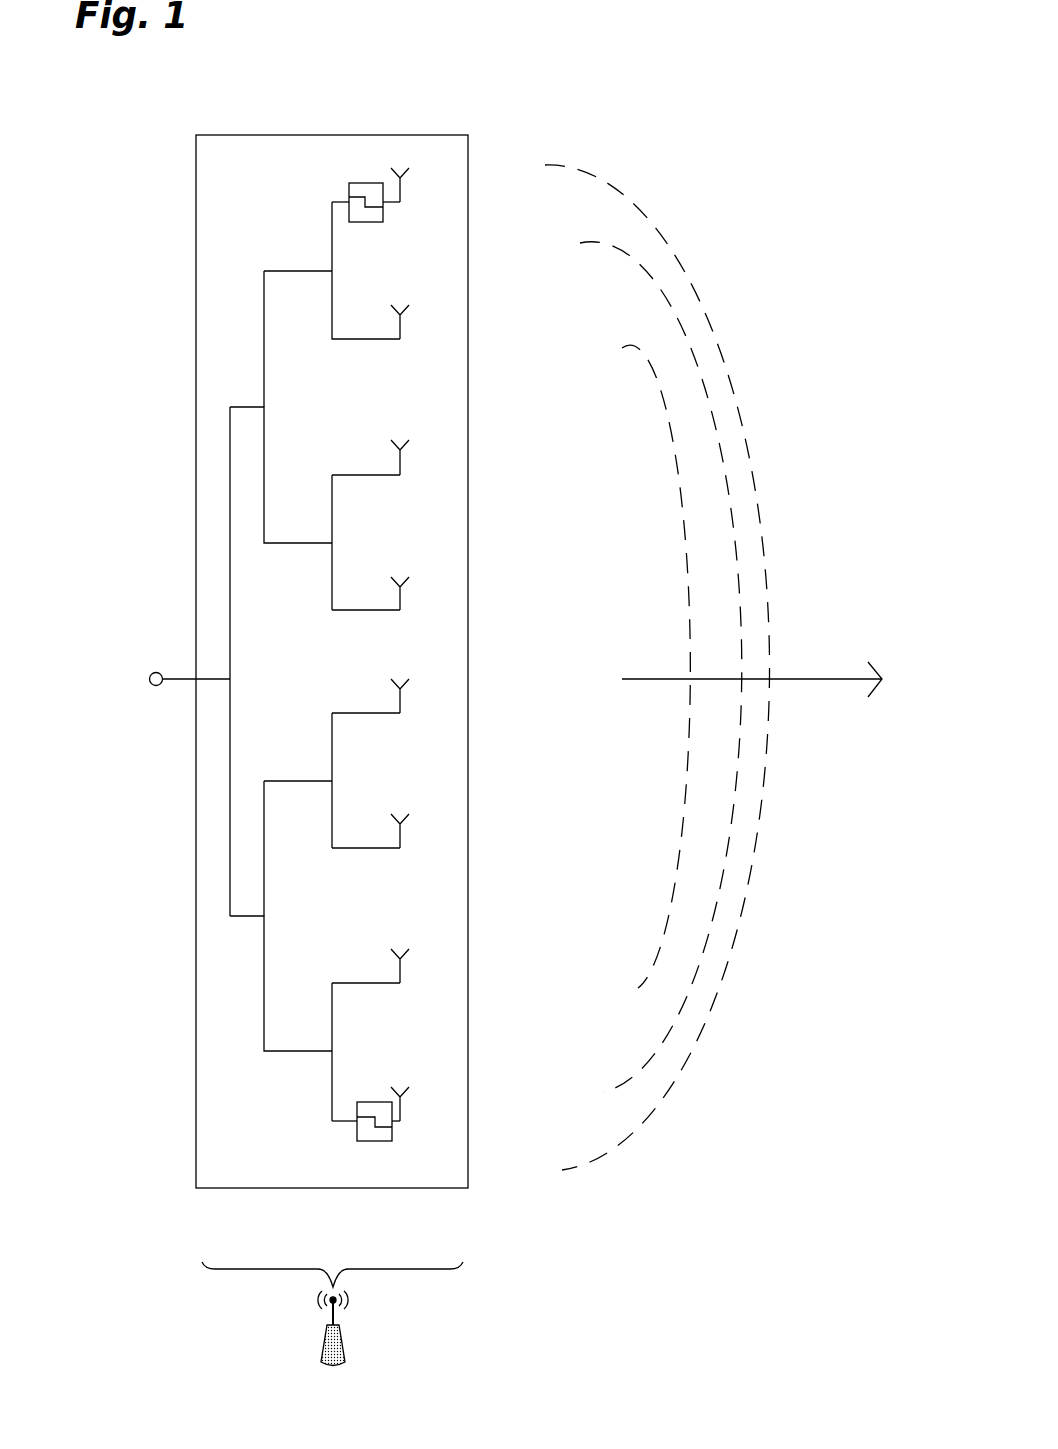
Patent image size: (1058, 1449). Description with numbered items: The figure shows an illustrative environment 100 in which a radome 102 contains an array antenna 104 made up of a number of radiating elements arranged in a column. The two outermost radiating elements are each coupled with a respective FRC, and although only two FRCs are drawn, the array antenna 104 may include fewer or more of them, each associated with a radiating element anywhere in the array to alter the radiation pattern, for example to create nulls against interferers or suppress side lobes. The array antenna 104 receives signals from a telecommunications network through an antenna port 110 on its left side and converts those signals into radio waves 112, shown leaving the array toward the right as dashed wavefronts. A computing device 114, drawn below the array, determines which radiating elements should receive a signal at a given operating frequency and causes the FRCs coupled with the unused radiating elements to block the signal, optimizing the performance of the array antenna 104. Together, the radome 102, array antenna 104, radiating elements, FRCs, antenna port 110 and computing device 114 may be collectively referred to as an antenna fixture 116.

The environment 100 is at (706, 54).
The radome 102 is at (196, 135).
The array antenna 104 is at (230, 483).
The antenna port 110 is at (149, 677).
The radio waves 112 is at (701, 667).
The computing device 114 is at (363, 1340).
The antenna fixture 116 is at (672, 1310).